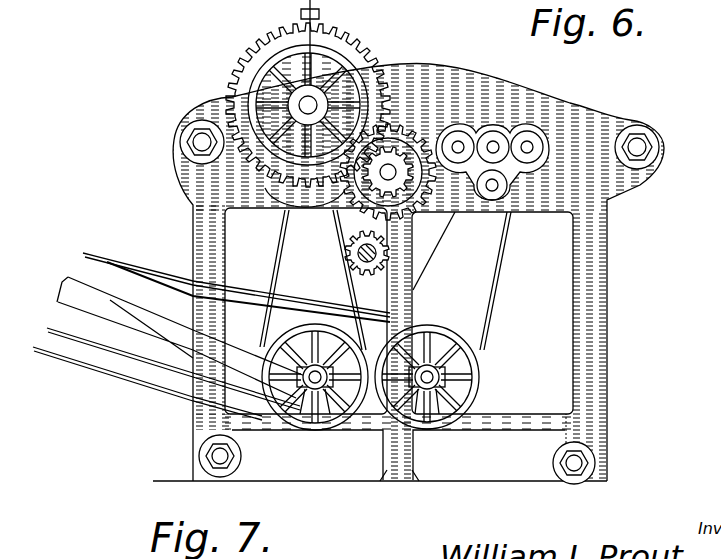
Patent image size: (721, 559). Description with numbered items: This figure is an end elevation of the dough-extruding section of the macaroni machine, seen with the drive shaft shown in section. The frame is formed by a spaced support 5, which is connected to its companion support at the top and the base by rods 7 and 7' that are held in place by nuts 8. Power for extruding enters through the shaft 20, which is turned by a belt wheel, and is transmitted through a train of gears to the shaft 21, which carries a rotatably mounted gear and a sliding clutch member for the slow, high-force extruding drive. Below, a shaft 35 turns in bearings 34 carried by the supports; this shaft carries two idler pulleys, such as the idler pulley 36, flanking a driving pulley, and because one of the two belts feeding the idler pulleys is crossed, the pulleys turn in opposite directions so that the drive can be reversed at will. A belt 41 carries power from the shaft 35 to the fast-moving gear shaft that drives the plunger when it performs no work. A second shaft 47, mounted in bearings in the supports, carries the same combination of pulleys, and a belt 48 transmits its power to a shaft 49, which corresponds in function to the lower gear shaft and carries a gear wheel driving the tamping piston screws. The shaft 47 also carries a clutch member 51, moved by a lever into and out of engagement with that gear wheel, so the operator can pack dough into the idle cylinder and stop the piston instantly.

The support 5 is at (600, 298).
The rod 7 is at (409, 144).
The rod 7' is at (397, 459).
The nut 8 is at (214, 457).
The shaft 20 is at (352, 258).
The shaft 21 is at (247, 92).
The bearing 34 is at (307, 402).
The shaft 35 is at (316, 384).
The idler pulley 36 is at (270, 346).
The belt 41 is at (277, 261).
The shaft 47 is at (435, 388).
The belt 48 is at (492, 318).
The shaft 49 is at (478, 205).
The clutch member 51 is at (327, 42).